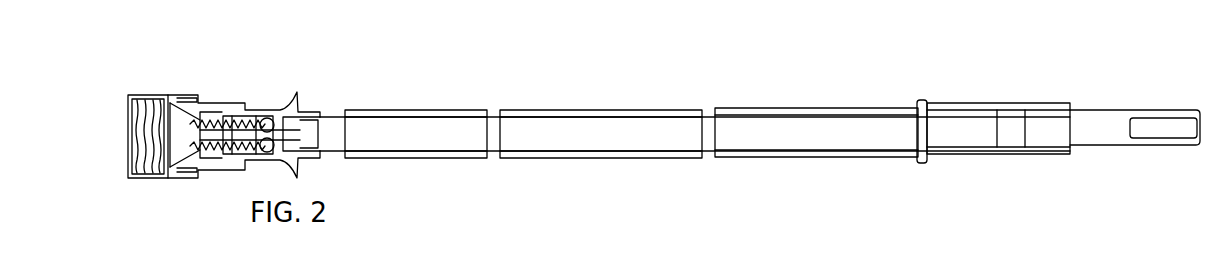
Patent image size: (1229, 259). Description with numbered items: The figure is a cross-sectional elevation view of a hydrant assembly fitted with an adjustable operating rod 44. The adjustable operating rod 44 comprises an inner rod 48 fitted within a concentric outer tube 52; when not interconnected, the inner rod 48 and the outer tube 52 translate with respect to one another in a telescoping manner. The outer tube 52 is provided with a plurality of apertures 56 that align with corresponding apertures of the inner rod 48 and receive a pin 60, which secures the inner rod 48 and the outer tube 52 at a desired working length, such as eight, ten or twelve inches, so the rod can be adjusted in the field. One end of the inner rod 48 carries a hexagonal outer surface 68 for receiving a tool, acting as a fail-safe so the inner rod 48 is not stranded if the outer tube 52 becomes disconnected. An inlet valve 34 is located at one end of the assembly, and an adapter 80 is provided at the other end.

The inlet valve 34 is at (227, 107).
The adjustable operating rod 44 is at (640, 72).
The inner rod 48 is at (422, 138).
The outer tube 52 is at (603, 158).
The aperture 56 is at (708, 158).
The pin 60 is at (915, 127).
The hexagonal outer surface 68 is at (990, 148).
The adapter 80 is at (1095, 132).